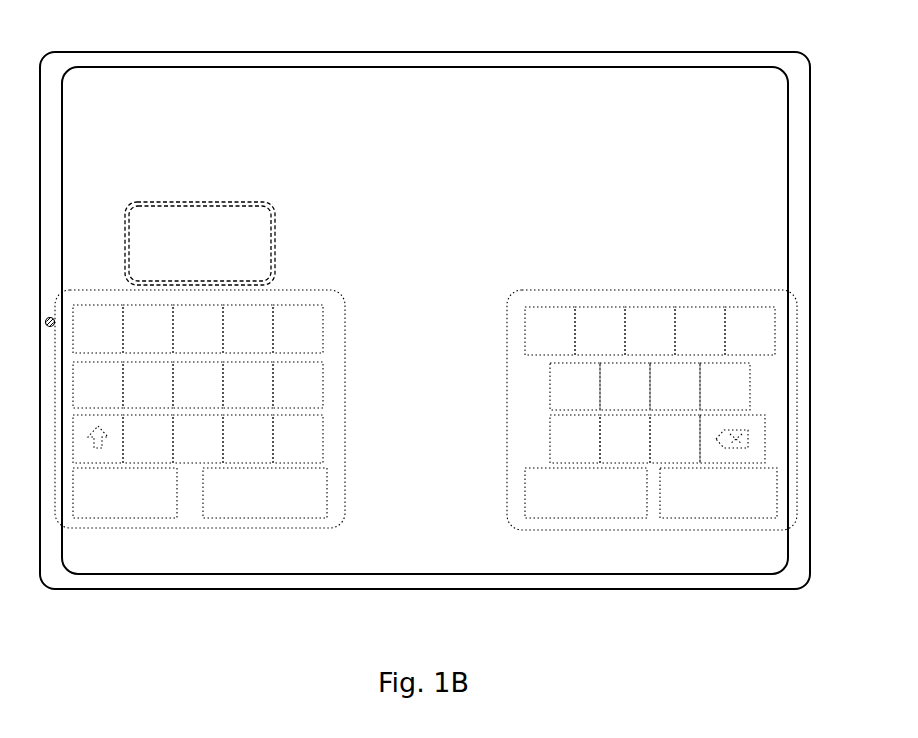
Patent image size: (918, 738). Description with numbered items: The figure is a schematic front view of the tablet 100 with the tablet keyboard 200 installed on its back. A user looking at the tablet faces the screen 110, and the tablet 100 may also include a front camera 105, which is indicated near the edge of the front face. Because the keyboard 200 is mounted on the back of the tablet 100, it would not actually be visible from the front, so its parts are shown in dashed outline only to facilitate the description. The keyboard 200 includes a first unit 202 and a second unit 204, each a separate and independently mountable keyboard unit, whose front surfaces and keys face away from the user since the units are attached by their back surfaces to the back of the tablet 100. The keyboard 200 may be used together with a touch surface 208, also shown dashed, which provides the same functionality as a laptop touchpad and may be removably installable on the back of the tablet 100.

The tablet 100 is at (663, 635).
The screen 110 is at (655, 88).
The front camera 105 is at (53, 305).
The tablet keyboard 200 is at (493, 272).
The first unit 202 is at (688, 273).
The second unit 204 is at (368, 470).
The touch surface 208 is at (179, 188).